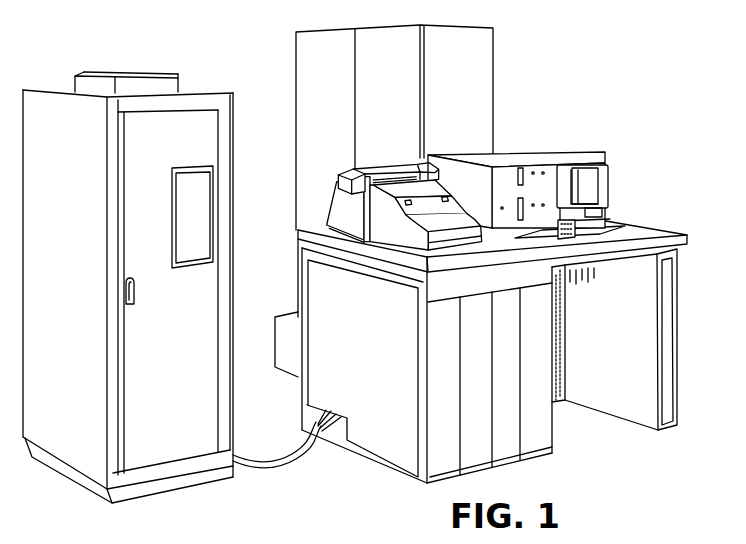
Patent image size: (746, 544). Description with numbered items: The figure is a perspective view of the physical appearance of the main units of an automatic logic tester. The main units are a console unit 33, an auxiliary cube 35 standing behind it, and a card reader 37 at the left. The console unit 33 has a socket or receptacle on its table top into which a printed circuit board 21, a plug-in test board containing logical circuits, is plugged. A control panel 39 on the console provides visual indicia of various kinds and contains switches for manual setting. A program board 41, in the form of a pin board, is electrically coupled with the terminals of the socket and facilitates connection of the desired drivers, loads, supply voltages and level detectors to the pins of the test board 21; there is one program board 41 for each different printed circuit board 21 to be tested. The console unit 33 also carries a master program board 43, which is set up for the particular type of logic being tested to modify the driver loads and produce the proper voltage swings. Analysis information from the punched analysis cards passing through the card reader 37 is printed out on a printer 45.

The printed circuit board 21 is at (557, 232).
The console unit 33 is at (687, 234).
The auxiliary cube 35 is at (397, 105).
The card reader 37 is at (77, 157).
The control panel 39 is at (535, 162).
The program board 41 is at (597, 190).
The master program board 43 is at (606, 172).
The printer 45 is at (360, 174).